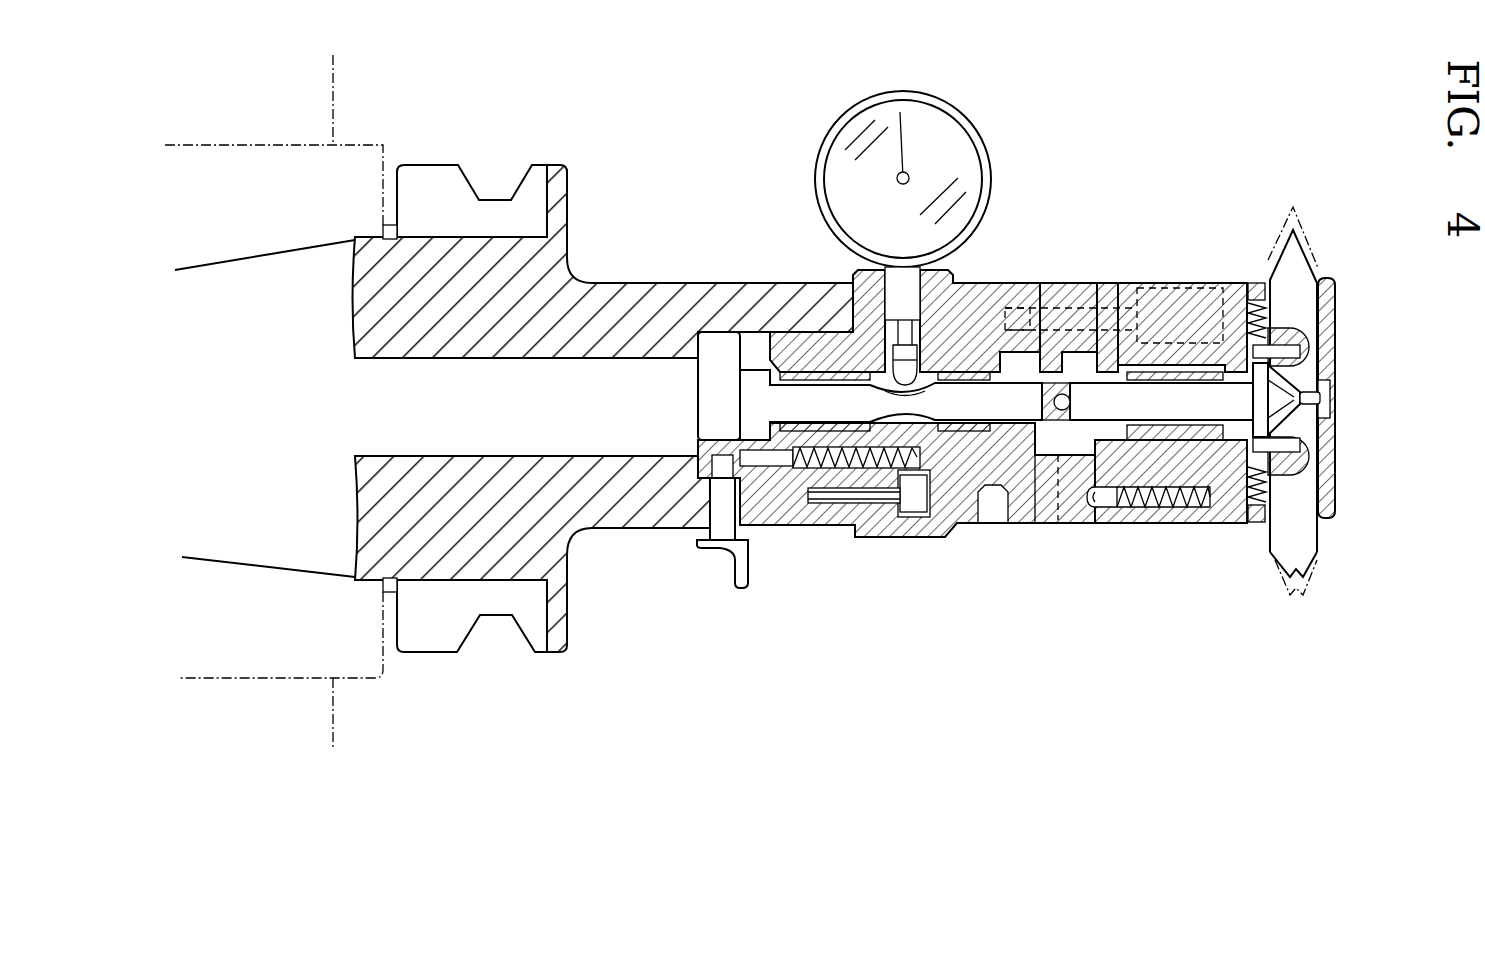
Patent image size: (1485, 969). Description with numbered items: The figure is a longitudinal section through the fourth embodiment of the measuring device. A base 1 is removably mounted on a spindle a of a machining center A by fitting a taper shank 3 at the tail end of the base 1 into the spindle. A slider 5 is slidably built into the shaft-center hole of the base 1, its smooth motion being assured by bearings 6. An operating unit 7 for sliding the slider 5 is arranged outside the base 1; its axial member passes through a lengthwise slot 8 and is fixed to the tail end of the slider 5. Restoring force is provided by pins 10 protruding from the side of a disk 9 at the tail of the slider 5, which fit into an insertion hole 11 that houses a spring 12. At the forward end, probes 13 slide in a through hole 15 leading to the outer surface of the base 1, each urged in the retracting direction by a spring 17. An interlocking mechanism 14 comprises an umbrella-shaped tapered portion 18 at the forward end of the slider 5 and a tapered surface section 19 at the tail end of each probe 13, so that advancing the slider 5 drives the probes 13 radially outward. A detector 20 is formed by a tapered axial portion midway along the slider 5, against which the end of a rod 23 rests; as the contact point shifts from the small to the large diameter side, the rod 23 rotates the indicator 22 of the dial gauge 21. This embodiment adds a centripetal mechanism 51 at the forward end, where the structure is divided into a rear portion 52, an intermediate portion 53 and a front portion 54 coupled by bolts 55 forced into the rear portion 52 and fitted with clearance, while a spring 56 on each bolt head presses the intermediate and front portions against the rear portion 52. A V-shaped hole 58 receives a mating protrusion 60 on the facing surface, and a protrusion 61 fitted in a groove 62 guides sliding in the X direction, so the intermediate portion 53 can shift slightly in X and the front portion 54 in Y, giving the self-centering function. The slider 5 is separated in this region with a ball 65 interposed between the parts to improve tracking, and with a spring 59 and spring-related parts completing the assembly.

The base 1 is at (627, 283).
The taper shank 3 is at (218, 308).
The machining center A is at (305, 88).
The spindle a is at (357, 157).
The slider 5 is at (772, 400).
The bearings 6 is at (808, 368).
The operating unit 7 is at (738, 555).
The slot 8 is at (763, 465).
The disk 9 is at (717, 343).
The pins 10 is at (752, 515).
The insertion hole 11 is at (818, 468).
The spring 12 is at (877, 468).
The probes 13 is at (1295, 267).
The interlocking mechanism 14 is at (1295, 380).
The through hole 15 is at (1325, 300).
The spring 17 is at (1262, 345).
The umbrella-shaped tapered portion 18 is at (1285, 398).
The tapered surface section 19 is at (1292, 405).
The detector 20 is at (907, 404).
The dial gauge 21 is at (828, 136).
The indicator 22 is at (905, 148).
The rod 23 is at (893, 357).
The centripetal mechanism 51 is at (1083, 527).
The rear portion 52 is at (990, 310).
The intermediate portion 53 is at (1070, 335).
The front portion 54 is at (1112, 330).
The bolts 55 is at (1205, 320).
The spring 56 is at (1162, 300).
The V-shaped hole 58 is at (1105, 505).
The return spring 59 is at (1175, 505).
The protrusion 60 is at (1110, 505).
The protrusion 61 is at (1073, 500).
The groove 62 is at (1045, 513).
The ball 65 is at (1070, 400).